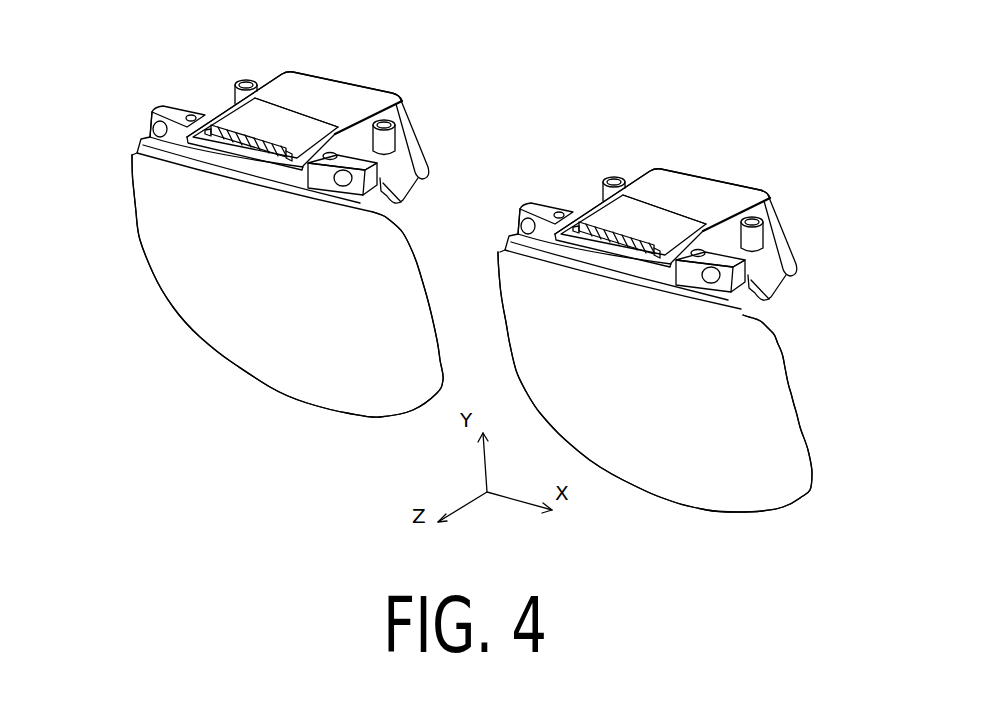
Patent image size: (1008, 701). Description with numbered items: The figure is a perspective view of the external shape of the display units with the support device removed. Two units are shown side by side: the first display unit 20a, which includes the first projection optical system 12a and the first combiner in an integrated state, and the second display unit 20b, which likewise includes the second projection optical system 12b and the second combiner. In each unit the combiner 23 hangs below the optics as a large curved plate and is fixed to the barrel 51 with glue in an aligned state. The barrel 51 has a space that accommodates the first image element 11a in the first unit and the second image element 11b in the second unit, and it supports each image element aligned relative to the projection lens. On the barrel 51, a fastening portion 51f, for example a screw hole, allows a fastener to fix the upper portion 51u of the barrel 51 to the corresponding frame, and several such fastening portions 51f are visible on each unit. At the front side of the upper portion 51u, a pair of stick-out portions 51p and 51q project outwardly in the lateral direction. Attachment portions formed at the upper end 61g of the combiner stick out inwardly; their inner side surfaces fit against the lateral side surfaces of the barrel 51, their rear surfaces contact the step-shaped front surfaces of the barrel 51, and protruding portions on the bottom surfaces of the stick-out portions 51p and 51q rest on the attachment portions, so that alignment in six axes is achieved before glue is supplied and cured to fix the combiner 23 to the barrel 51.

The first display unit 20a is at (364, 71).
The second display unit 20b is at (732, 168).
The first projection optical system 12a is at (308, 88).
The second projection optical system 12b is at (676, 185).
The first image element 11a is at (238, 130).
The second image element 11b is at (606, 227).
The barrel 51 is at (407, 158).
The fastening portion 51f is at (152, 112).
The stick-out portion 51p is at (148, 132).
The stick-out portion 51q is at (375, 181).
The upper portion of the barrel 51u is at (283, 93).
The upper end of the first combiner 61g is at (187, 163).
The lens (103a/103b) 23 is at (333, 397).